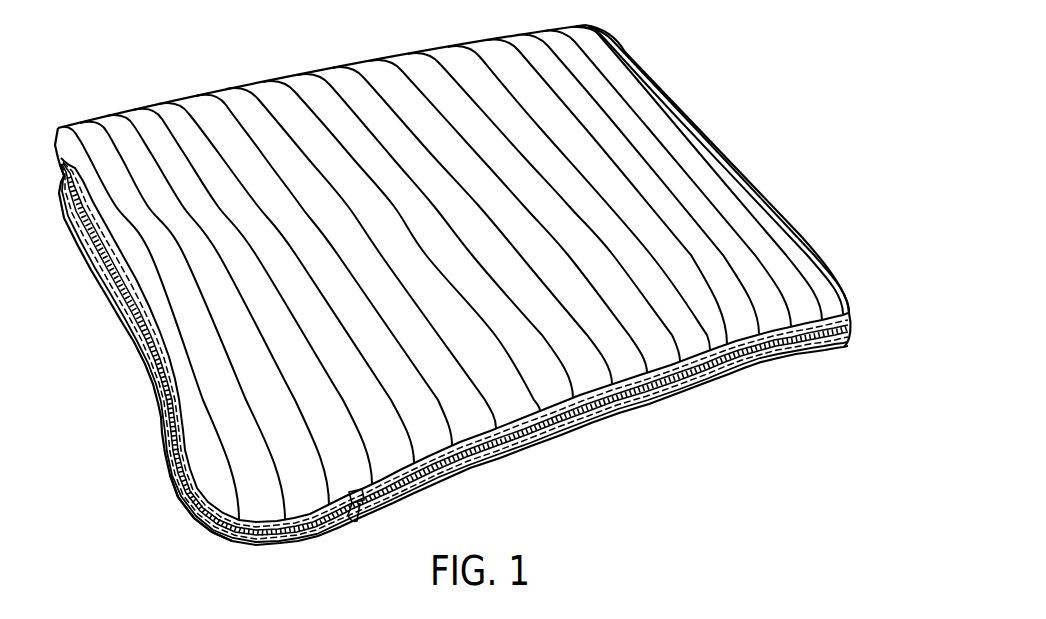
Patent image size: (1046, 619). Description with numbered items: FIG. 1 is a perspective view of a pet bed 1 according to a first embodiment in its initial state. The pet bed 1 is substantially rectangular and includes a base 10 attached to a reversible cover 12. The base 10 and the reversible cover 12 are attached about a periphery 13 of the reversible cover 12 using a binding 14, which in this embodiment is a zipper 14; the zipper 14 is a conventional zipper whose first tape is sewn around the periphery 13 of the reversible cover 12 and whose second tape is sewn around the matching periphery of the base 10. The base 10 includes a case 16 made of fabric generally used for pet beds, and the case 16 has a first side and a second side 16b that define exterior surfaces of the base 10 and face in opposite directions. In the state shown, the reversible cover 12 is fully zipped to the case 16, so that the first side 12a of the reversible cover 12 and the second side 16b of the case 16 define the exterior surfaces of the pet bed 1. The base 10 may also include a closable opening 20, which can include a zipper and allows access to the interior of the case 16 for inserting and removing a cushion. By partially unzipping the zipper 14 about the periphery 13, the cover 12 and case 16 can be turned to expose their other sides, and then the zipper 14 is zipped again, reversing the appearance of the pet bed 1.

The pet bed 1 is at (467, 284).
The base 10 is at (118, 305).
The reversible cover 12 is at (240, 147).
The first side of the reversible cover 12a is at (765, 200).
The periphery of the reversible cover 13 is at (848, 328).
The binding 14 is at (184, 507).
The case 16 is at (588, 418).
The second side of the case 16b is at (790, 352).
The closable opening 20 is at (367, 503).